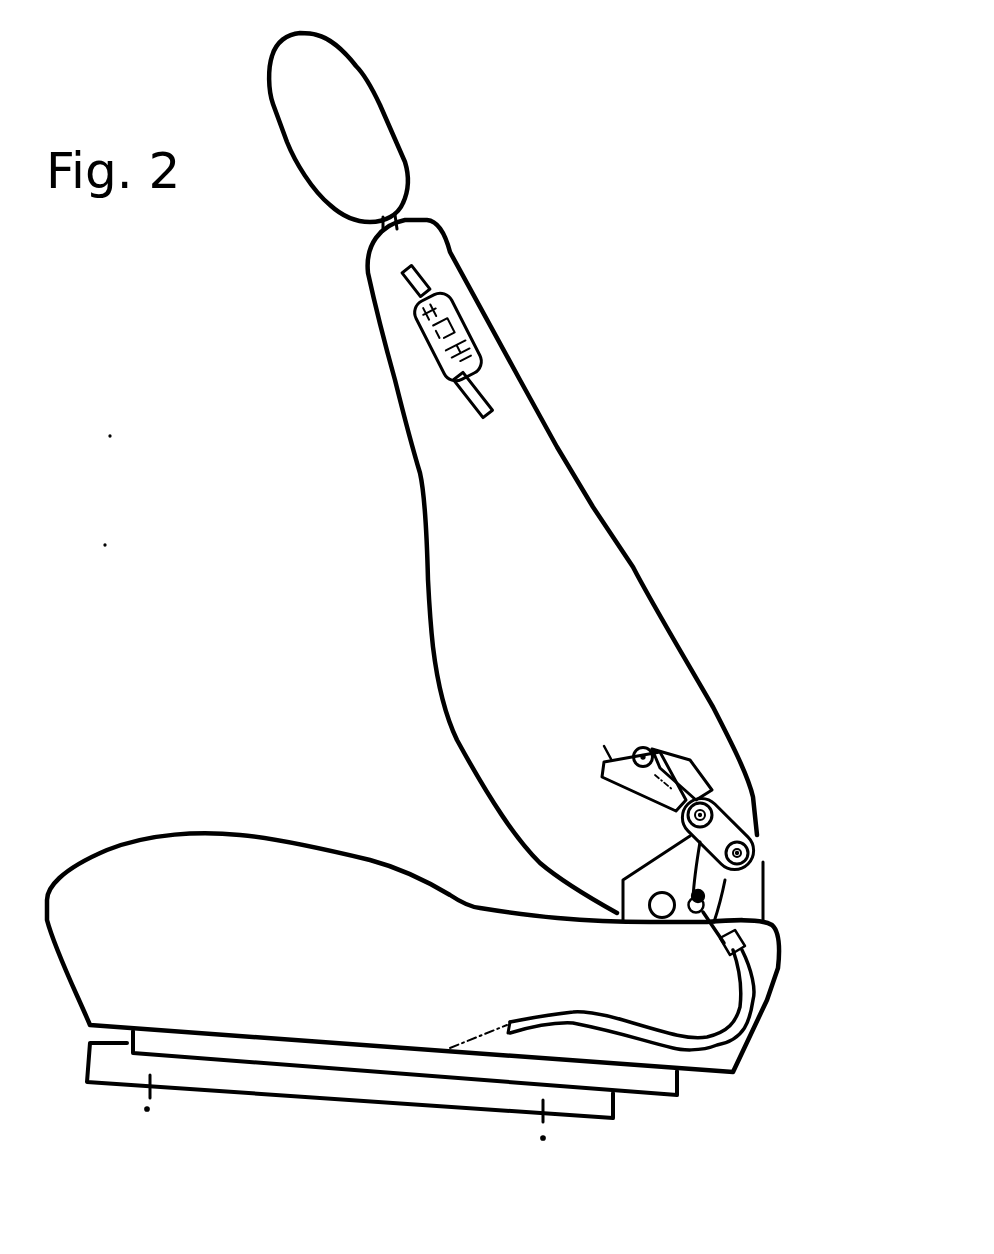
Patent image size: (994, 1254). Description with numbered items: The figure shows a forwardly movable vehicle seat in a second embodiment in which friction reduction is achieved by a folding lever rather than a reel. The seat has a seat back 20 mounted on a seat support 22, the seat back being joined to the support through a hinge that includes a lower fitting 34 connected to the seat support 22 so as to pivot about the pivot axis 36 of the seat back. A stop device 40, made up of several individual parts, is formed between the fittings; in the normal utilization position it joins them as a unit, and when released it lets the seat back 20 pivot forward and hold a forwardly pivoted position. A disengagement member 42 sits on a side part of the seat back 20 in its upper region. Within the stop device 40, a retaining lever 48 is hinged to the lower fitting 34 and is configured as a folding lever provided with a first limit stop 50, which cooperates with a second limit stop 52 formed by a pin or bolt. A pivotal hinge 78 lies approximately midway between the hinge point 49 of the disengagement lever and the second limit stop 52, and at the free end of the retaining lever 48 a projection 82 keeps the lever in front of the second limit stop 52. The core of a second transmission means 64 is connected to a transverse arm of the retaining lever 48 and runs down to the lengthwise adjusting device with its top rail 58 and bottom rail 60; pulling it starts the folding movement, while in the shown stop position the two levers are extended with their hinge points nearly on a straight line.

The seat back 20 is at (520, 462).
The seat support 22 is at (183, 917).
The lower fitting 34 is at (737, 907).
The pivot axis 36 is at (645, 909).
The stop device 40 is at (780, 771).
The disengagement member 42 is at (433, 305).
The retaining lever 48 is at (745, 826).
The hinge point 49 is at (755, 863).
The first limit stop 50 is at (663, 762).
The second limit stop 52 is at (648, 747).
The top rail 58 is at (207, 1047).
The bottom rail 60 is at (98, 1067).
The second transmission means 64 is at (747, 993).
The pivotal hinge 78 is at (680, 830).
The projection 82 is at (608, 760).